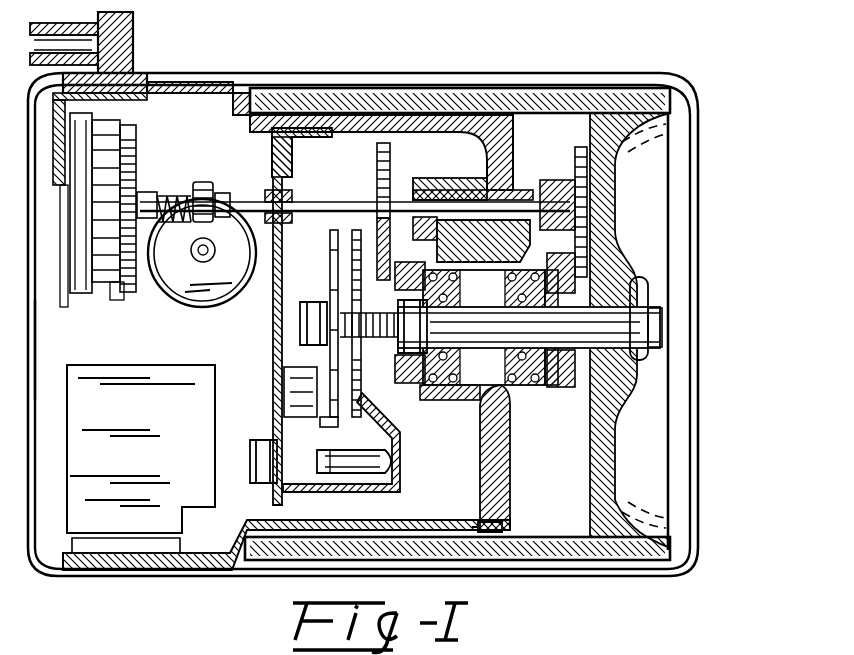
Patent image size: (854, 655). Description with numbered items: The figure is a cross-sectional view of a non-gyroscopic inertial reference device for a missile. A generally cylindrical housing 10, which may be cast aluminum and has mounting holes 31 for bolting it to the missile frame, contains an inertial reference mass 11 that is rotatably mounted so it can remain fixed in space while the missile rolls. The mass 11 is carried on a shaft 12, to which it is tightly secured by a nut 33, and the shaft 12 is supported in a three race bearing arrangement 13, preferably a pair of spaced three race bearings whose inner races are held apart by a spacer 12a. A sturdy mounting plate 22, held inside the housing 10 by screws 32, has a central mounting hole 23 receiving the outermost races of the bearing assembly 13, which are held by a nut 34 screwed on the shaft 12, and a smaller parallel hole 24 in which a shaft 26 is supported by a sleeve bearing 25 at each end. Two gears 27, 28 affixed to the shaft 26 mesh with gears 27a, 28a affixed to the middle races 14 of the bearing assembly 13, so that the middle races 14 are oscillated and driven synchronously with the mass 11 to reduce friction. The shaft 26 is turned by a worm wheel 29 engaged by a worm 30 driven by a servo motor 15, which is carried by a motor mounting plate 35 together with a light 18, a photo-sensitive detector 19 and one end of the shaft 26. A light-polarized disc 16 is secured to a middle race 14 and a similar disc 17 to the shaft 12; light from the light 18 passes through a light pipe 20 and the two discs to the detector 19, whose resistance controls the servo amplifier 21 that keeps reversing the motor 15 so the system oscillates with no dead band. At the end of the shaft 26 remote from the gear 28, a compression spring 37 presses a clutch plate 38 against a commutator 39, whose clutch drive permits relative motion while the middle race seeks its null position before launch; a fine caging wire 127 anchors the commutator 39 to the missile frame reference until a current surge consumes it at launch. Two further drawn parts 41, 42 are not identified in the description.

The housing 10 is at (128, 570).
The inertial reference mass 11 is at (691, 488).
The shaft 12 is at (529, 327).
The spacer 12a is at (492, 306).
The three race bearing arrangement 13 is at (512, 440).
The middle race 14 is at (402, 268).
The servo motor 15 is at (216, 306).
The light-polarized disc 16 is at (352, 421).
The light-polarized disc 17 is at (330, 259).
The light 18 is at (378, 473).
The photo-sensitive detector 19 is at (284, 395).
The light pipe 20 is at (396, 421).
The servo amplifier 21 is at (194, 471).
The mounting plate 22 is at (513, 138).
The mounting hole 23 is at (476, 400).
The hole 24 is at (506, 208).
The sleeve bearing 25 is at (425, 180).
The shaft 26 is at (305, 201).
The gear 27 is at (392, 164).
The gear 27a is at (368, 262).
The gear 28 is at (587, 174).
The gear 28a is at (563, 390).
The worm wheel 29 is at (208, 182).
The worm 30 is at (215, 247).
The mounting holes 31 is at (133, 46).
The screws 32 is at (510, 522).
The nut 33 is at (640, 287).
The nut 34 is at (313, 345).
The motor mounting plate 35 is at (272, 348).
The compression spring 37 is at (176, 192).
The clutch plate 38 is at (146, 292).
The commutator 39 is at (122, 300).
The case wall 41 is at (37, 350).
The cover 42 is at (652, 73).
The fine wire 127 is at (118, 121).